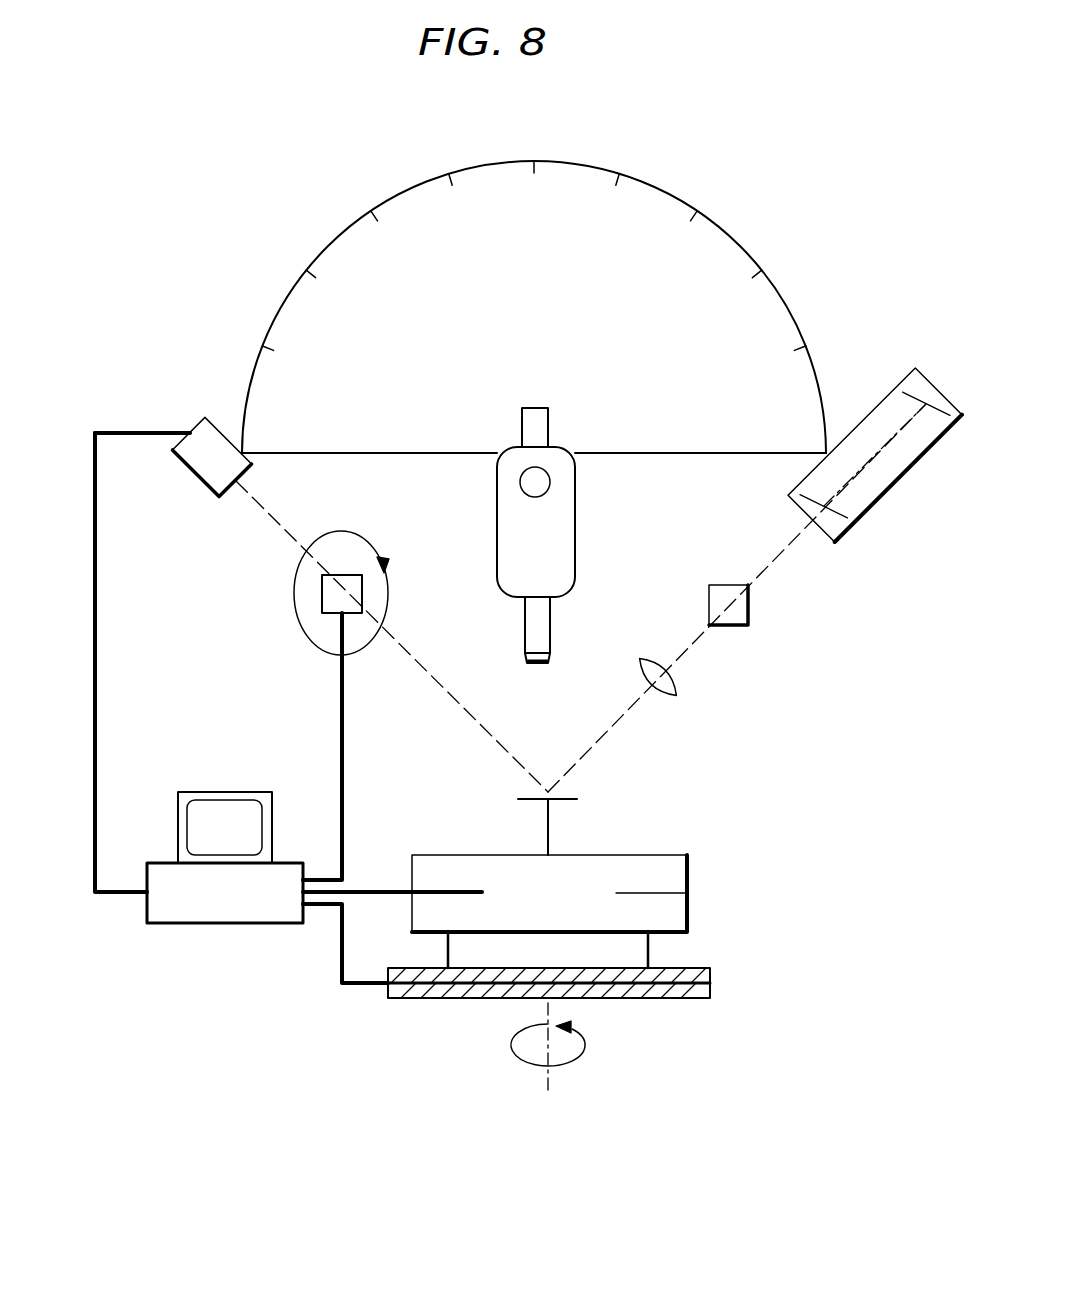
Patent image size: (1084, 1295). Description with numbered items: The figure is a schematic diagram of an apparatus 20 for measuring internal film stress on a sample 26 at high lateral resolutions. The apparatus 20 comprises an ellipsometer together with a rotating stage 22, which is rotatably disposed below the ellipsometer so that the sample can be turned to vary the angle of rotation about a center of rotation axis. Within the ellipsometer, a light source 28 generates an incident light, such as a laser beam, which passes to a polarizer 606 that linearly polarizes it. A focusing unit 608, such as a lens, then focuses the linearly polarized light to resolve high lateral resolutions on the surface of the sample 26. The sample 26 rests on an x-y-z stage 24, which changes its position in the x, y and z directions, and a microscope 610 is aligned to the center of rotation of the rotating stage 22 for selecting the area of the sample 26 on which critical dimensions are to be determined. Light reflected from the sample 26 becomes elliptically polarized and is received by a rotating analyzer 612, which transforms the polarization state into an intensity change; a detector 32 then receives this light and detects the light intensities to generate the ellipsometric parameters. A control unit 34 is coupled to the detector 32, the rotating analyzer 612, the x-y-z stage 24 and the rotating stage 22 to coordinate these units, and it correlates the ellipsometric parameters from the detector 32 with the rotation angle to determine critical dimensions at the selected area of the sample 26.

The apparatus 20 is at (751, 230).
The detector 32 is at (193, 428).
The rotating analyzer 612 is at (293, 583).
The microscope 610 is at (575, 557).
The light source 28 is at (882, 400).
The polarizer 606 is at (748, 610).
The focusing unit 608 is at (752, 723).
The control unit 34 is at (289, 863).
The sample 26 is at (546, 837).
The x-y-z stage 24 is at (650, 921).
The rotating stage 22 is at (776, 963).